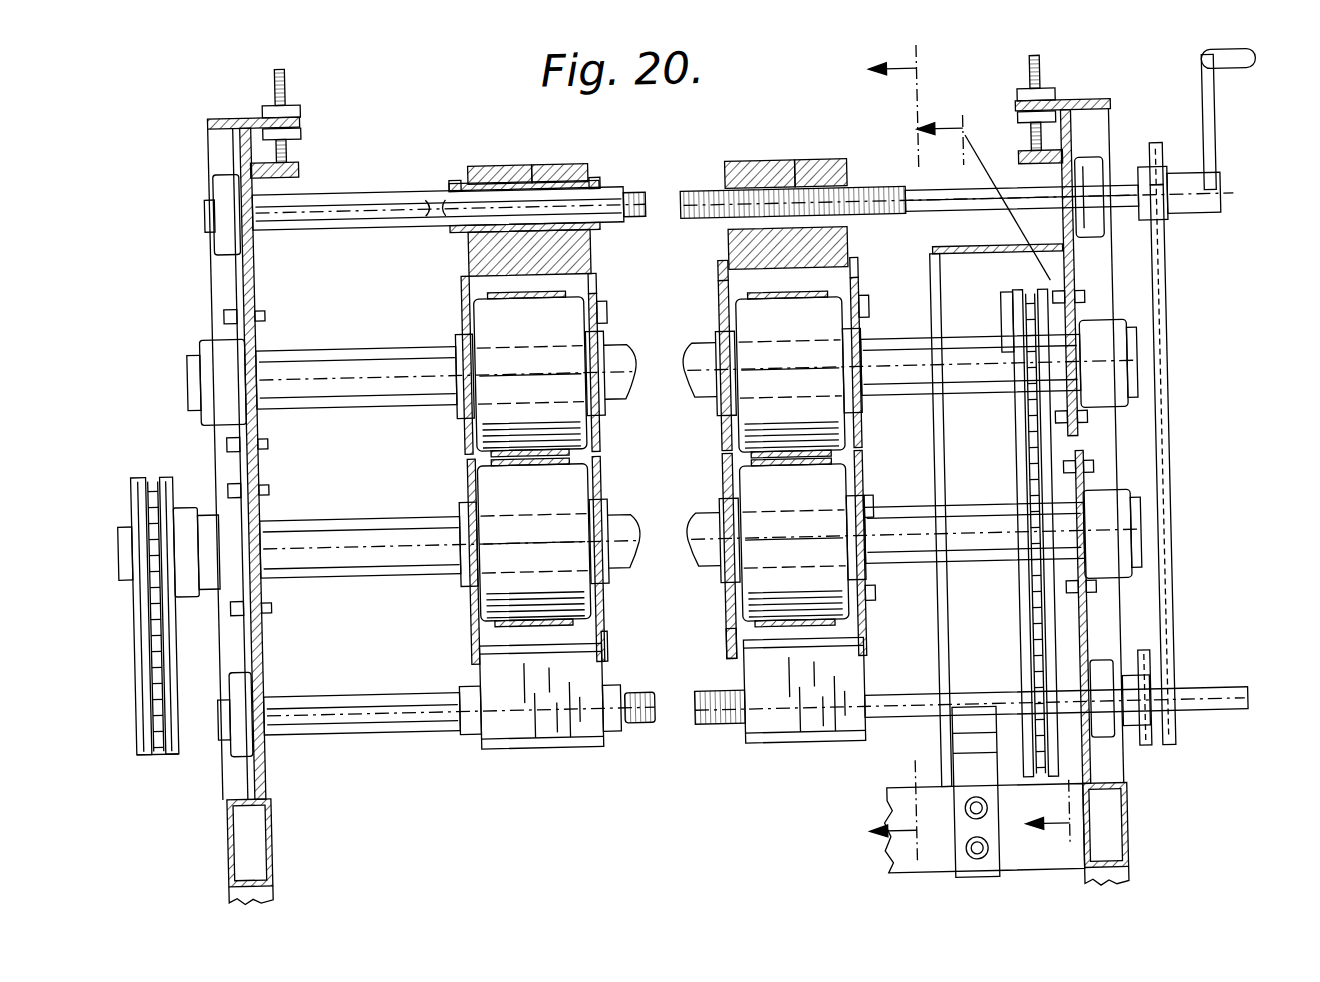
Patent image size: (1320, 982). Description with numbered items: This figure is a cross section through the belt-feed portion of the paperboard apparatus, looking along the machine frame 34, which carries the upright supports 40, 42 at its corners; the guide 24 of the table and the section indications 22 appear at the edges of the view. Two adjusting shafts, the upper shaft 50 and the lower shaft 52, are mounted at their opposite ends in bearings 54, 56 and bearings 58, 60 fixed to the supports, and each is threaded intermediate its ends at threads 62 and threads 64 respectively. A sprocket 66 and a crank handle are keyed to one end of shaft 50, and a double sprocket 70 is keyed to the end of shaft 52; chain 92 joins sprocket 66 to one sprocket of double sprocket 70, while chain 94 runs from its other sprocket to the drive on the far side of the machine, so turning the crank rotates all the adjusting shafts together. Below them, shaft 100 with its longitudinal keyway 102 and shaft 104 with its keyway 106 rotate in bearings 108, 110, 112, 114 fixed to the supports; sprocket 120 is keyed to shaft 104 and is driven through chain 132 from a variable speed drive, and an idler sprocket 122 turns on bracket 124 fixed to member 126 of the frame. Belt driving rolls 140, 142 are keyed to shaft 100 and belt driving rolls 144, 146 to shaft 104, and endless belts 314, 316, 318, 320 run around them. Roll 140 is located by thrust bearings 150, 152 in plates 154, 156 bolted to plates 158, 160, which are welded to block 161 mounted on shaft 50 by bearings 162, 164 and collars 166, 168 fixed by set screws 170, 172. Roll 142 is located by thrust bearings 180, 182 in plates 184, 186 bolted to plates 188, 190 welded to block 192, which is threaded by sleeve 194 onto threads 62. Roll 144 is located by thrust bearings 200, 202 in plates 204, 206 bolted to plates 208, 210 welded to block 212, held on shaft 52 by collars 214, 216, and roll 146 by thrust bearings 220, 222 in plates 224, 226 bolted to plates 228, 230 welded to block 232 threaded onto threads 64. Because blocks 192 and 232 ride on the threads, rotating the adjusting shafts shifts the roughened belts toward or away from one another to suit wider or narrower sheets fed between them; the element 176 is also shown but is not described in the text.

The section line 22- 22 is at (886, 453).
The guide 24 is at (993, 479).
The machine frame 34 is at (215, 843).
The support 40 is at (302, 108).
The support 42 is at (1058, 109).
The shaft 50 is at (312, 221).
The shaft 52 is at (285, 727).
The bearing 54 is at (222, 178).
The bearing 56 is at (1100, 168).
The bearing 58 is at (230, 668).
The bearing 60 is at (1105, 730).
The threads 62 is at (645, 190).
The threads 64 is at (640, 722).
The sprocket 66 is at (1163, 154).
The double sprocket 70 is at (1150, 690).
The chain 92 is at (1170, 412).
The chain 94 is at (1146, 665).
The shaft 100 is at (302, 400).
The keyway 102 is at (372, 344).
The shaft 104 is at (322, 514).
The keyway 106 is at (318, 570).
The bearing 108 is at (206, 352).
The bearing 110 is at (1140, 374).
The bearing 112 is at (188, 498).
The bearing 114 is at (1140, 545).
The sprocket 120 is at (145, 466).
The idler sprocket 122 is at (1020, 662).
The bracket 124 is at (947, 740).
The member 126 is at (882, 870).
The chain 132 is at (133, 744).
The belt driving roll 140 is at (611, 308).
The belt driving roll 142 is at (870, 305).
The belt driving roll 144 is at (575, 459).
The belt driving roll 146 is at (836, 460).
The thrust bearing 150 is at (460, 372).
The thrust bearing 152 is at (618, 352).
The plate 154 is at (466, 300).
The plate 156 is at (601, 322).
The plate 158 is at (474, 252).
The plate 160 is at (601, 280).
The block 161 is at (530, 160).
The bearing 162 is at (500, 162).
The bearing 164 is at (568, 162).
The collar 166 is at (462, 176).
The collar 168 is at (604, 176).
The set screw 170 is at (440, 221).
The set screw 172 is at (606, 224).
The bracket 176 is at (1011, 300).
The thrust bearing 180 is at (712, 352).
The thrust bearing 182 is at (878, 352).
The plate 184 is at (723, 300).
The plate 186 is at (863, 320).
The plate 188 is at (723, 270).
The plate 190 is at (860, 268).
The block 192 is at (790, 163).
The sleeve 194 is at (830, 163).
The thrust bearing 200 is at (452, 540).
The thrust bearing 202 is at (618, 522).
The plate 204 is at (466, 490).
The plate 206 is at (601, 476).
The plate 208 is at (468, 634).
The plate 210 is at (604, 642).
The block 212 is at (505, 747).
The collar 214 is at (455, 727).
The collar 216 is at (607, 731).
The thrust bearing 220 is at (706, 568).
The thrust bearing 222 is at (873, 508).
The plate 224 is at (723, 478).
The plate 226 is at (863, 476).
The plate 228 is at (725, 634).
The plate 230 is at (873, 600).
The block 232 is at (792, 747).
The endless belt 314 is at (508, 306).
The belt 316 is at (758, 306).
The endless belt 318 is at (505, 474).
The endless belt 320 is at (760, 471).